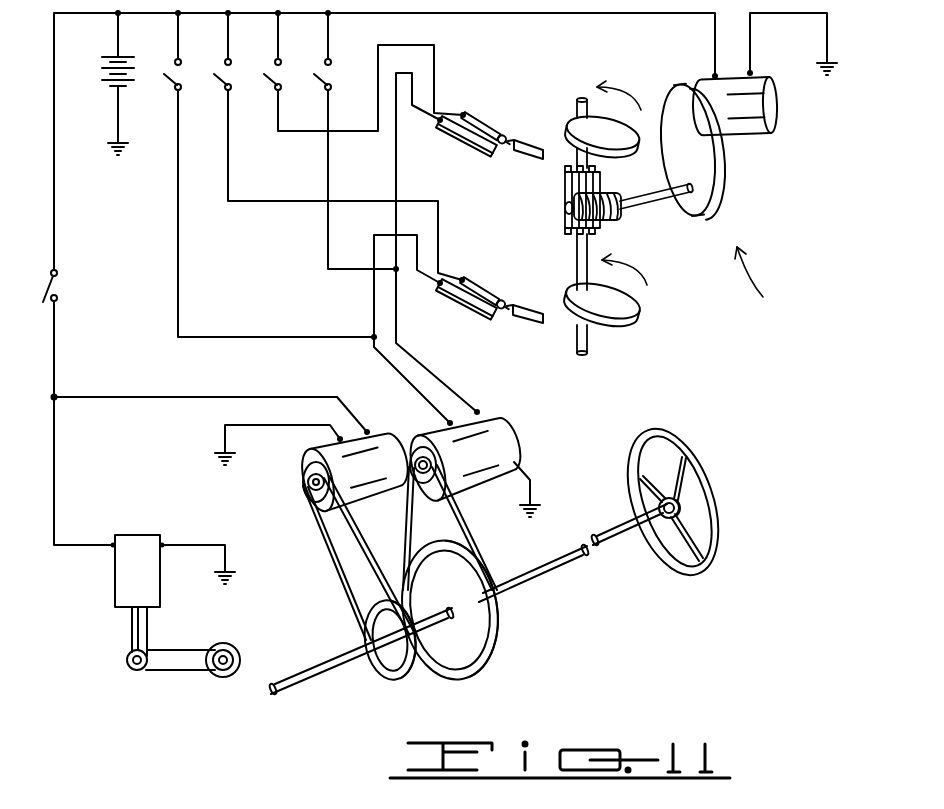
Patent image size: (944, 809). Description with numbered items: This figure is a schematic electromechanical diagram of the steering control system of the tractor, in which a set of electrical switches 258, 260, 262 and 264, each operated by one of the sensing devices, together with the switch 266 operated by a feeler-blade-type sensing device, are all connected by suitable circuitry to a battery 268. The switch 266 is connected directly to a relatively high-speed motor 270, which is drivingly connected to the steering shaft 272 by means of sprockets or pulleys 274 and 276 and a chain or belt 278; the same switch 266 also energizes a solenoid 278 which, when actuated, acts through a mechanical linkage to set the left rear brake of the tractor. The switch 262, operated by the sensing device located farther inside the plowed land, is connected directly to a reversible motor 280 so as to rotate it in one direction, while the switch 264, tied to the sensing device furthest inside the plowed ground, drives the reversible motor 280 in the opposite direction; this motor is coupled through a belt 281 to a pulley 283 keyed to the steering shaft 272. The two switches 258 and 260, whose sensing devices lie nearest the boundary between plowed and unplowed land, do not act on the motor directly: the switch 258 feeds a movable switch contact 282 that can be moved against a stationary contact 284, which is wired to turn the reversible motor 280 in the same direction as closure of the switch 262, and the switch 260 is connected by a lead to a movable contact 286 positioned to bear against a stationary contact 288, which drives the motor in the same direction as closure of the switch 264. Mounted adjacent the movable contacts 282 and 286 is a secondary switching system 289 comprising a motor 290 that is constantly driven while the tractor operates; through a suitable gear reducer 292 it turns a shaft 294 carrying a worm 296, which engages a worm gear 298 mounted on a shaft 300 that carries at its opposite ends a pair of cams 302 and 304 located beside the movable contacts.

The switch 258 is at (216, 75).
The switch 260 is at (266, 75).
The switch 262 is at (160, 75).
The switch 264 is at (314, 75).
The switch 266 is at (64, 281).
The battery 268 is at (100, 76).
The high-speed motor 270 is at (368, 497).
The steering shaft 272 is at (316, 676).
The pulley 274 is at (304, 487).
The pulley 276 is at (394, 665).
The belt 278 is at (330, 555).
The reversible motor 280 is at (498, 424).
The belt 281 is at (470, 528).
The movable switch contact 282 is at (486, 292).
The pulley 283 is at (471, 661).
The stationary contact 284 is at (462, 305).
The movable contact 286 is at (482, 124).
The stationary contact 288 is at (465, 136).
The secondary switching system 289 is at (770, 279).
The motor 290 is at (756, 131).
The gear reducer 292 is at (728, 196).
The shaft 294 is at (672, 216).
The worm 296 is at (614, 217).
The worm gear 298 is at (560, 188).
The shaft 300 is at (576, 248).
The cam 302 is at (612, 150).
The cam 304 is at (641, 325).